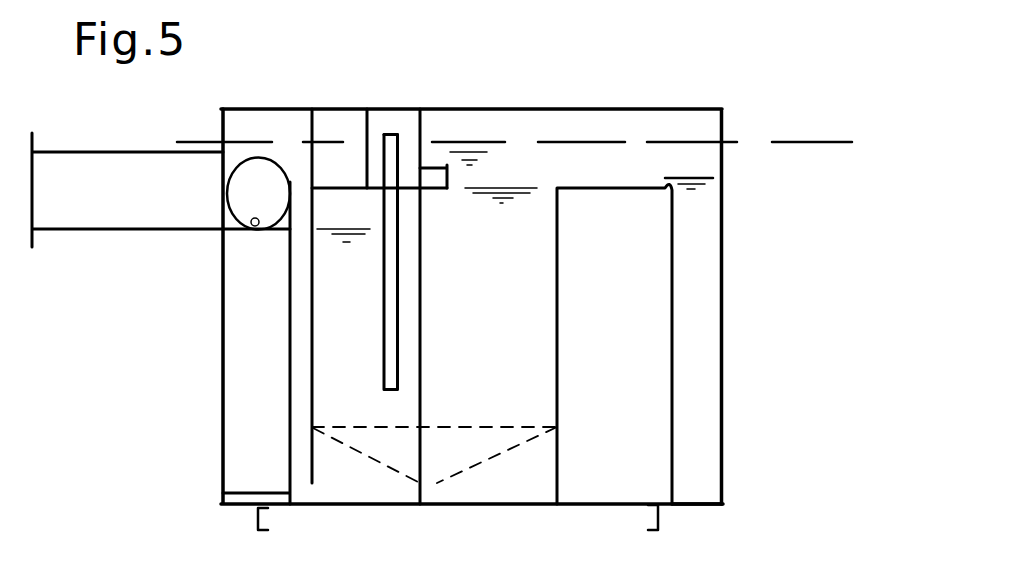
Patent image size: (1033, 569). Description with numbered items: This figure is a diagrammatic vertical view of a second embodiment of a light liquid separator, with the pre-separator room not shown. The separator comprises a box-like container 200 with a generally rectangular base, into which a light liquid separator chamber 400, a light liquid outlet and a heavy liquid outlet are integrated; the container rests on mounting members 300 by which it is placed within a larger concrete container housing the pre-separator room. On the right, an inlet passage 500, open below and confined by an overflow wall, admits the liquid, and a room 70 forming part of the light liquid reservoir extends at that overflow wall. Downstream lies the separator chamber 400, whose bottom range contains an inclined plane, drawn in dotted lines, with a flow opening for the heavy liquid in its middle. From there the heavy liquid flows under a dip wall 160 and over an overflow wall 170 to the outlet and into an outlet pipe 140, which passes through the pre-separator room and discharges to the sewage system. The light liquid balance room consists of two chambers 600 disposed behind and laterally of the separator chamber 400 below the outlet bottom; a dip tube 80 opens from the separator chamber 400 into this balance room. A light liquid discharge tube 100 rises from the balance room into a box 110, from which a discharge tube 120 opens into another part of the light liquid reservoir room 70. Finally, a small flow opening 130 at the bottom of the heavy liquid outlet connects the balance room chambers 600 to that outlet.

The room of the light liquid reservoir 70 is at (635, 338).
The dip tube 80 is at (378, 296).
The light liquid discharge tube 100 is at (397, 150).
The box 110 is at (400, 149).
The discharge tube 120 is at (445, 176).
The small flow opening 130 is at (252, 226).
The outlet pipe 140 is at (126, 202).
The dip wall 160 is at (312, 383).
The overflow wall 170 is at (288, 338).
The container 200 is at (722, 342).
The mounting members 300 is at (695, 476).
The light liquid separator chamber 400 is at (500, 342).
The inlet passage 500 is at (712, 433).
The light liquid balance room chambers 600 is at (458, 537).